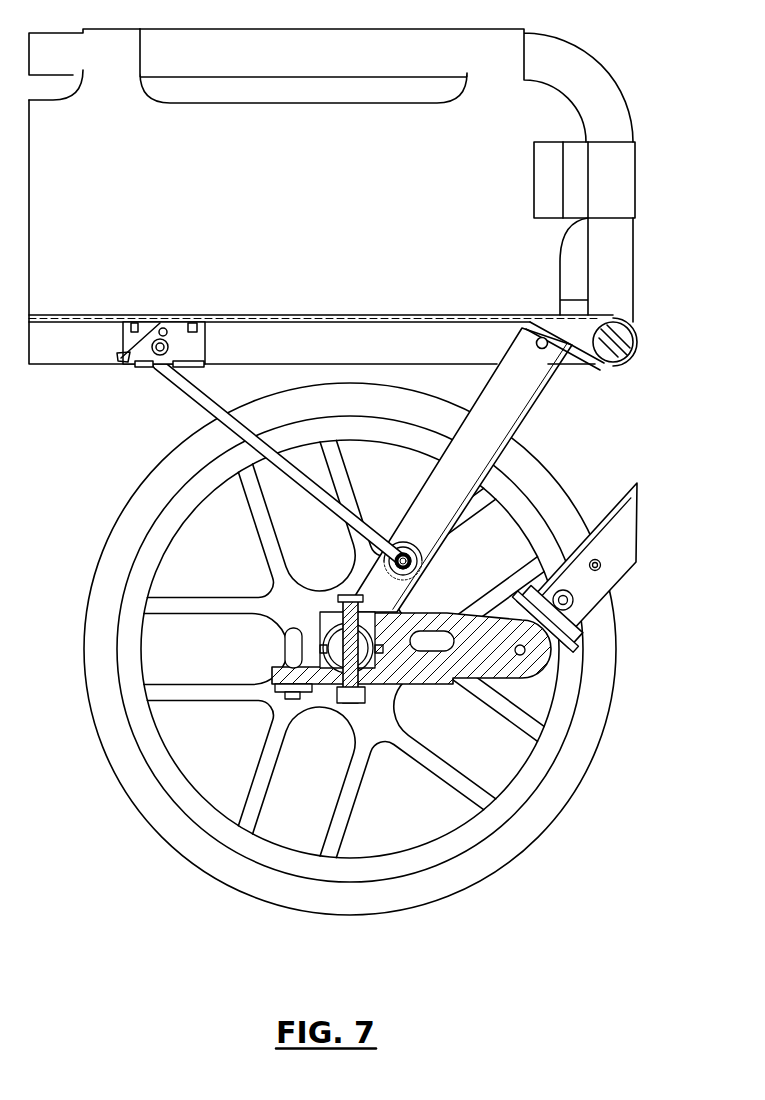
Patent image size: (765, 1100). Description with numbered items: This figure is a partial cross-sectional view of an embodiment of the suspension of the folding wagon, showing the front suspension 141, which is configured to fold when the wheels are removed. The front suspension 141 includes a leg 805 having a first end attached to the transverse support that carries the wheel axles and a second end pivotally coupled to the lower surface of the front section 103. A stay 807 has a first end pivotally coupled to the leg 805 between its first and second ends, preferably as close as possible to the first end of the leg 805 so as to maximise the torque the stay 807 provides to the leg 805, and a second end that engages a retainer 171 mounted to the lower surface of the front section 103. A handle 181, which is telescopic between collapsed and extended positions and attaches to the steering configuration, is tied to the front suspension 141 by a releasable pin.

The front section 103 is at (660, 100).
The retainer 171 is at (187, 340).
The stay 807 is at (195, 377).
The leg 805 is at (510, 405).
The handle 181 is at (628, 527).
The front suspension 141 is at (445, 723).